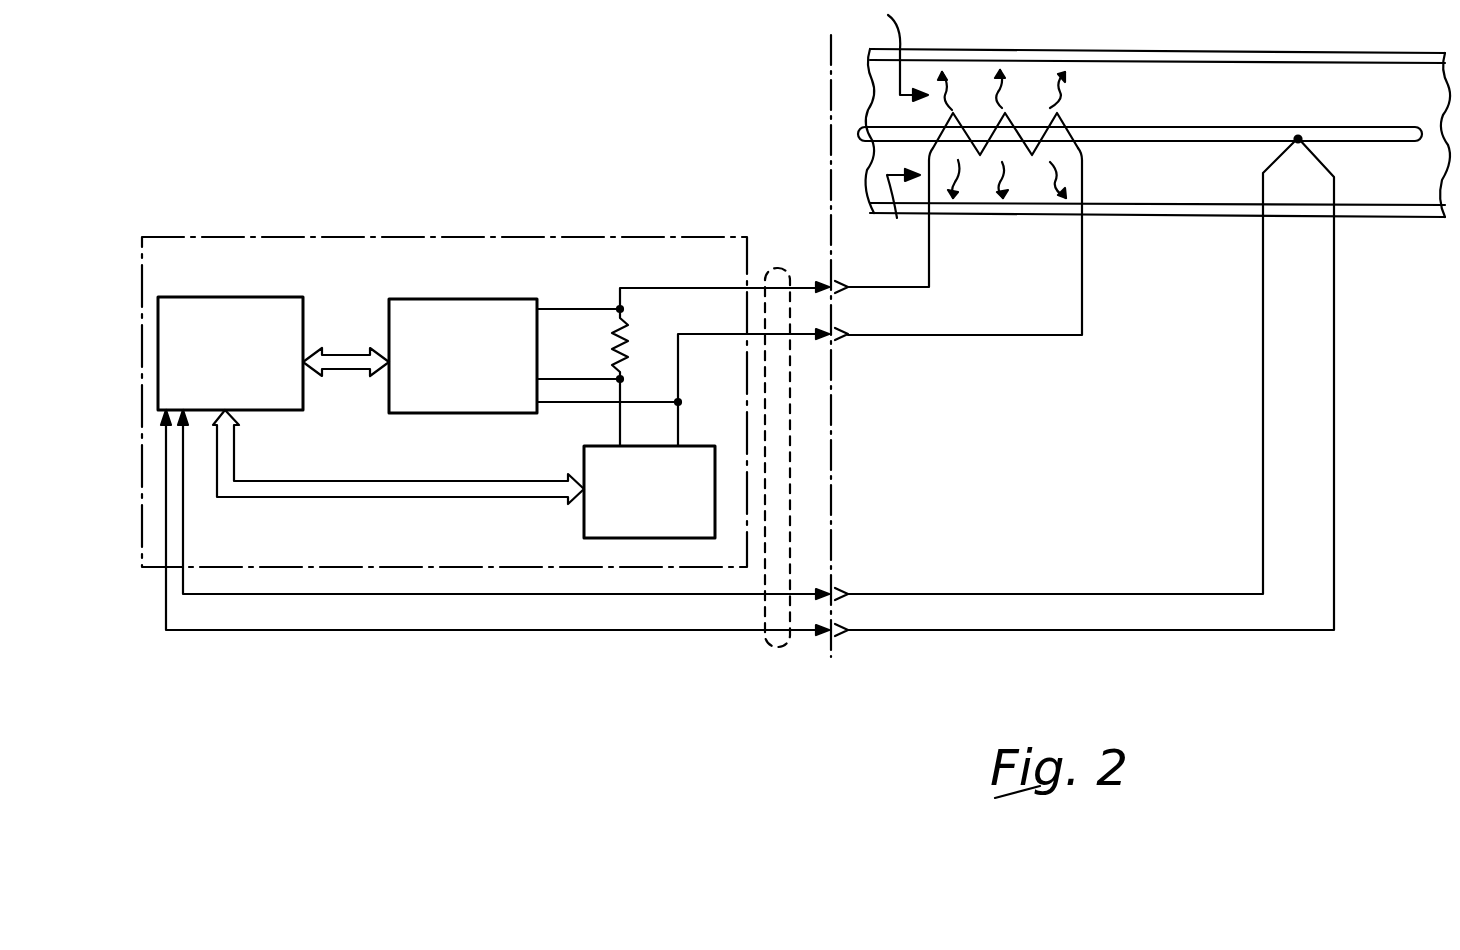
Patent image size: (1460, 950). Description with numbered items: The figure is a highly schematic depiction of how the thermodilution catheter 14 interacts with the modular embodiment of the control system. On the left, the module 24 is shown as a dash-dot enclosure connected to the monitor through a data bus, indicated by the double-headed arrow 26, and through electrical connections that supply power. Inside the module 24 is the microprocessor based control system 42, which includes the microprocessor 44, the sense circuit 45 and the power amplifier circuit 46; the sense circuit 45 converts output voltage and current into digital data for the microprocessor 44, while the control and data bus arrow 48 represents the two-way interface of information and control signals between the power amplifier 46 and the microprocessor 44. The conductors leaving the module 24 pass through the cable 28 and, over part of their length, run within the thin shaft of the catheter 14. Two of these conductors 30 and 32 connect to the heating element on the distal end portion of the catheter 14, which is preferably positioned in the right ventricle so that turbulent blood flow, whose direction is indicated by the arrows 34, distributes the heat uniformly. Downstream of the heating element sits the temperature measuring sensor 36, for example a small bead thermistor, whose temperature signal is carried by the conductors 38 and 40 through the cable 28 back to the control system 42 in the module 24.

The catheter 14 is at (862, 128).
The module 24 is at (483, 236).
The data bus 26 is at (352, 377).
The cable 28 is at (778, 268).
The conductor 30 is at (929, 255).
The conductor 32 is at (1082, 310).
The arrows indicating direction of blood flow 34 is at (891, 132).
The temperature measuring sensor 36 is at (1298, 139).
The conductor 38 is at (1262, 482).
The conductor 40 is at (1334, 501).
The microprocessor based control system 42 is at (580, 293).
The microprocessor 44 is at (831, 481).
The sense circuit 45 is at (422, 298).
The power amplifier circuit 46 is at (584, 524).
The control and data bus arrow 48 is at (518, 480).